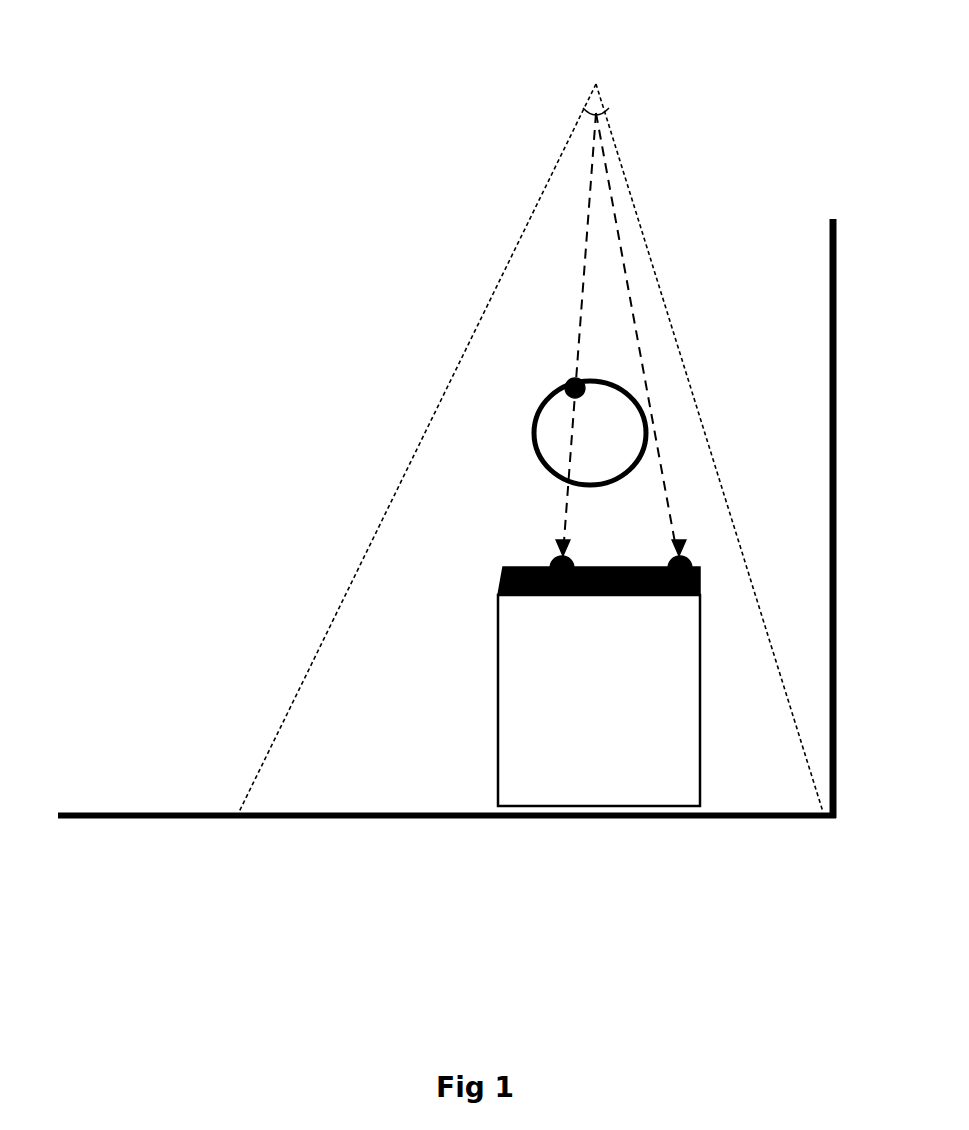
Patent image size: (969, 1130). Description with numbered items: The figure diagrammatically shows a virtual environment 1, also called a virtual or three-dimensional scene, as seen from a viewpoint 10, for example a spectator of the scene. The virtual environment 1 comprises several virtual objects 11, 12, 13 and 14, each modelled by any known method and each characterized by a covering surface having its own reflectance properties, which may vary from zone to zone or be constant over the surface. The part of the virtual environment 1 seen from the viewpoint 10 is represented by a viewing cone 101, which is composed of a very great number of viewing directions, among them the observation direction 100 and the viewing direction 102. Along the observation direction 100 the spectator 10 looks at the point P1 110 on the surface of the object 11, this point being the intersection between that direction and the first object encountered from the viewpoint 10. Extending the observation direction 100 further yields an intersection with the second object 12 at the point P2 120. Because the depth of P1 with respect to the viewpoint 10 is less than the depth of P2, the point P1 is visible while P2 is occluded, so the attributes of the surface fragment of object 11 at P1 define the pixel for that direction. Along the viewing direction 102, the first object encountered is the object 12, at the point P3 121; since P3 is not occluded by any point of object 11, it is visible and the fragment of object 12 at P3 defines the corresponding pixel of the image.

The virtual environment 1 is at (238, 222).
The viewpoint 10 is at (608, 97).
The observation direction 100 is at (583, 233).
The viewing cone 101 is at (640, 215).
The viewing direction 102 is at (650, 400).
The point P1 110 is at (565, 385).
The virtual object 11 is at (560, 425).
The virtual object 12 is at (520, 693).
The point P2 120 is at (553, 563).
The point P3 121 is at (684, 573).
The virtual object 13 is at (157, 812).
The virtual object 14 is at (829, 340).
The point P1 is at (598, 370).
The point P2 is at (580, 554).
The point P3 is at (697, 554).